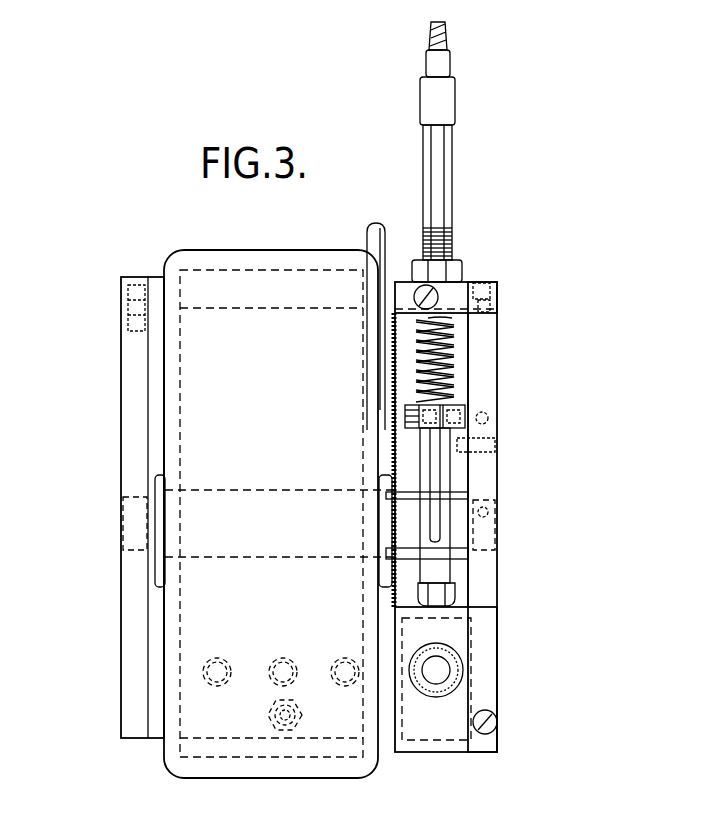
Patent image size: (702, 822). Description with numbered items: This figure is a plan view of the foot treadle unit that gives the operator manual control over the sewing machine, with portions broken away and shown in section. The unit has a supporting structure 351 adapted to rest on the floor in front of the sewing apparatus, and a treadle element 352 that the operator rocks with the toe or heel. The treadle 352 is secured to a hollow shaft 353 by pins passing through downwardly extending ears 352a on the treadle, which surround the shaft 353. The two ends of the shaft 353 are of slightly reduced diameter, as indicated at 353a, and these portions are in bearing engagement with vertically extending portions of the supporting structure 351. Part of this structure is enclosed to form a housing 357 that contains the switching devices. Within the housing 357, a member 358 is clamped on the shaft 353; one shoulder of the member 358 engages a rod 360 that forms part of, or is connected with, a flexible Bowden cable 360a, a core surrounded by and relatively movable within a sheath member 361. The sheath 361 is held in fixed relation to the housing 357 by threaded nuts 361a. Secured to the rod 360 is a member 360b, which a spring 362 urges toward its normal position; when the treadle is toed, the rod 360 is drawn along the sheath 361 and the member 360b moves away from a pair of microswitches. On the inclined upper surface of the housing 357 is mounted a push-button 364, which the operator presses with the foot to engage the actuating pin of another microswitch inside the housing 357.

The supporting structure 351 is at (128, 427).
The treadle element 352 is at (200, 367).
The downwardly extending ears 352a is at (155, 478).
The hollow shaft 353 is at (237, 490).
The reduced-diameter end portions of shaft 353a is at (122, 527).
The housing 357 is at (447, 752).
The member 358 is at (446, 582).
The rod 360 is at (440, 477).
The Bowden cable 360a is at (447, 37).
The member 360b is at (462, 412).
The sheath member 361 is at (440, 163).
The threaded nuts 361a is at (460, 270).
The spring 362 is at (456, 343).
The push-button 364 is at (440, 678).